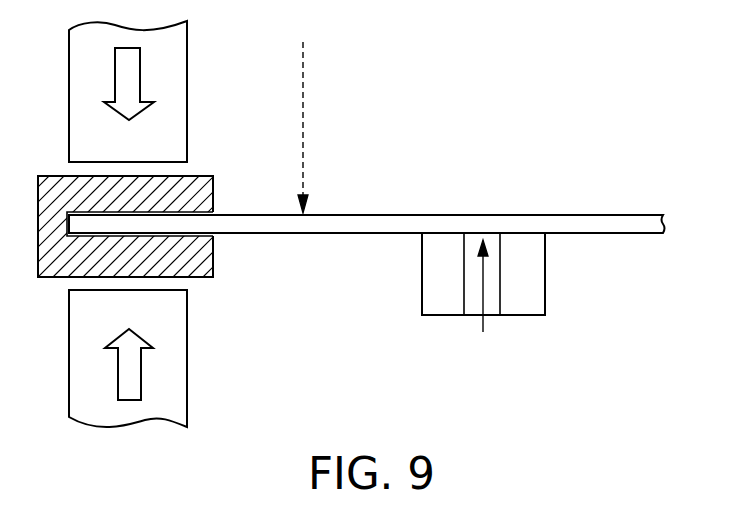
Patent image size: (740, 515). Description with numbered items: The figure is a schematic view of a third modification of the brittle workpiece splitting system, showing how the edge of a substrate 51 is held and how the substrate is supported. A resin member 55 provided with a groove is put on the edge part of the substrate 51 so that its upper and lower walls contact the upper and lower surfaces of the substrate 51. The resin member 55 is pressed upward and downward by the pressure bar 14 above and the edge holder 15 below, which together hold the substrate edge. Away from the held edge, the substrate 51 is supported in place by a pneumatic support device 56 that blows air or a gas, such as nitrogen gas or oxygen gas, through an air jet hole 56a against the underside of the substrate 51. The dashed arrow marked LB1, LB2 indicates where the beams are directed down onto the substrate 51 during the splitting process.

The pressure bar 14 is at (180, 337).
The edge holder 15 is at (178, 72).
The substrate 51 is at (603, 223).
The resin member 55 is at (200, 183).
The pneumatic support device 56 is at (522, 268).
The air jet hole 56a is at (490, 307).
The laser beam LB1 is at (361, 127).
The laser beam LB2 is at (305, 90).